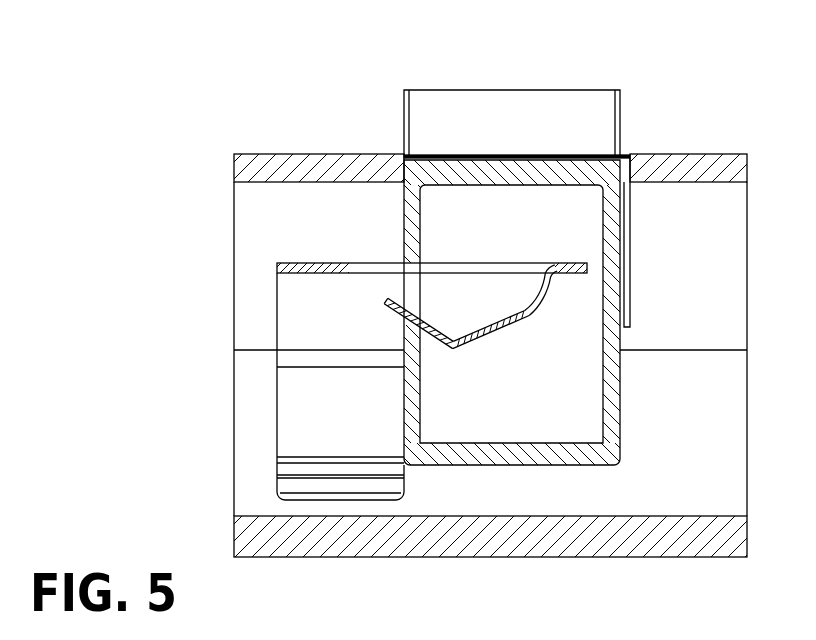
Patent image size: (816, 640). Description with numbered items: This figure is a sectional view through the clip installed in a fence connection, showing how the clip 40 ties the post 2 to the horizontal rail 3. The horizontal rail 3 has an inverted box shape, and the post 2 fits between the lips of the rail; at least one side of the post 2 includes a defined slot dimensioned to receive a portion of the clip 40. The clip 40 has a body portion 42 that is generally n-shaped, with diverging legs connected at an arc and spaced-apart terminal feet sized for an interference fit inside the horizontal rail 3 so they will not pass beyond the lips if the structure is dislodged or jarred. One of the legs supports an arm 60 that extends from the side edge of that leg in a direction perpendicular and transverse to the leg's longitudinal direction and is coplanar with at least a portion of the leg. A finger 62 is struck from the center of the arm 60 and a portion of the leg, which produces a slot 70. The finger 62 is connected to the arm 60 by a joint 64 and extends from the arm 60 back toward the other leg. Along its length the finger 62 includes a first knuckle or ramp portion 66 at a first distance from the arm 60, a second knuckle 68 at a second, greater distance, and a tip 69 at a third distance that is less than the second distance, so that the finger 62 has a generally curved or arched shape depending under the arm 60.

The post 2 is at (627, 100).
The horizontal rail 3 is at (703, 148).
The clip 40 is at (250, 223).
The body portion 42 is at (250, 378).
The arm 60 is at (484, 308).
The finger 62 is at (498, 372).
The joint 64 is at (549, 284).
The first knuckle or ramp portion 66 is at (522, 318).
The second knuckle 68 is at (458, 349).
The tip 69 is at (388, 302).
The slot 70 is at (488, 263).